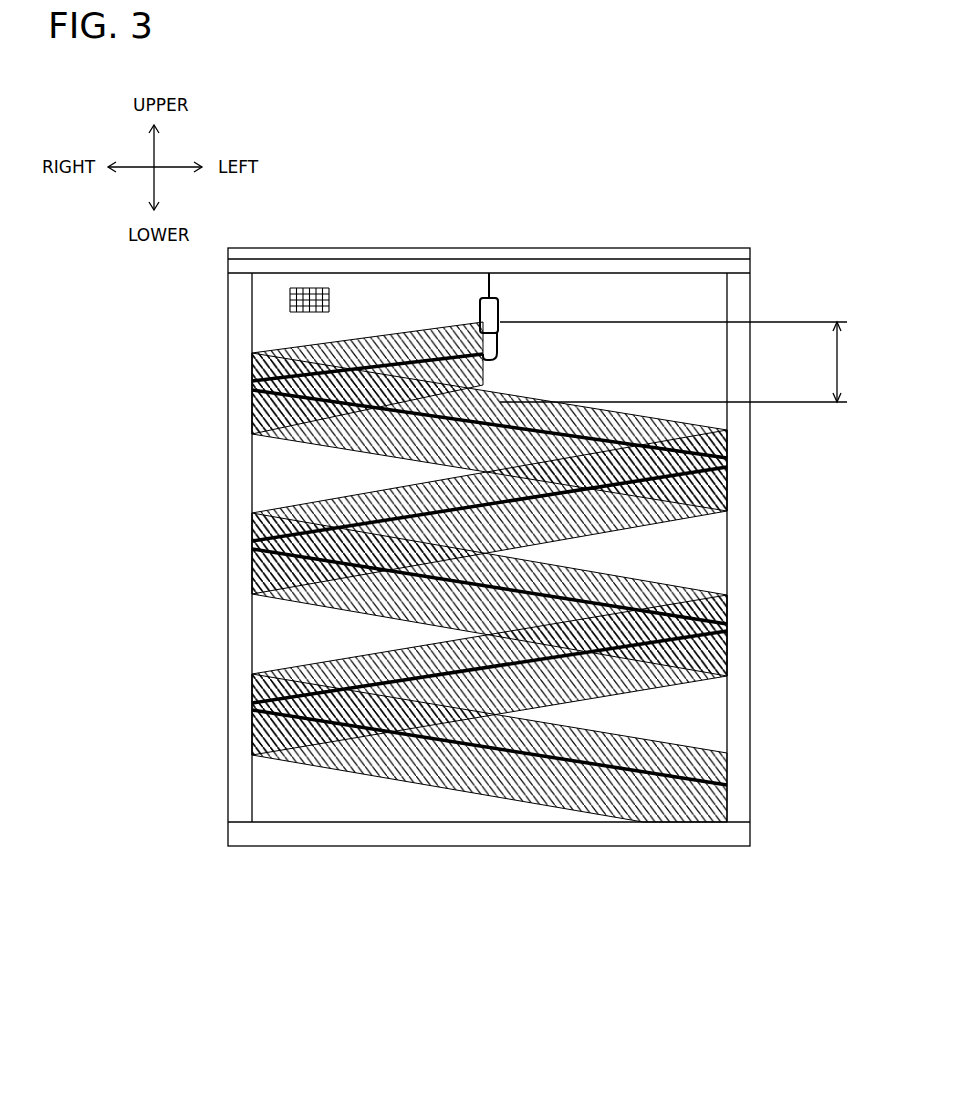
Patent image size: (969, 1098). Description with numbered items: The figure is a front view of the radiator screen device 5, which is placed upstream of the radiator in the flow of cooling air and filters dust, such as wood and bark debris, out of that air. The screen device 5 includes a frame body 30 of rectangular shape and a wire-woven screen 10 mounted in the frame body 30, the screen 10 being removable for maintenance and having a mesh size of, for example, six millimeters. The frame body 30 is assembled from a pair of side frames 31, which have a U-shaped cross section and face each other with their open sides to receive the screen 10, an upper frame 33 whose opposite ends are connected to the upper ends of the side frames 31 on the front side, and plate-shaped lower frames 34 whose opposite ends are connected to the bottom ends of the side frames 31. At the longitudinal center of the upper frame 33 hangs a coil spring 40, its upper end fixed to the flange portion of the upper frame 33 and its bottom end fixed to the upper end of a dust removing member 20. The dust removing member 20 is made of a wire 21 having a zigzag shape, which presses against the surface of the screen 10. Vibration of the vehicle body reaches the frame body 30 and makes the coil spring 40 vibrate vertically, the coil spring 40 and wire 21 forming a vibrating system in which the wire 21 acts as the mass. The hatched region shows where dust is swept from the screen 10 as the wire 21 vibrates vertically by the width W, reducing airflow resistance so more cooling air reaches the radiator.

The screen device 5 is at (699, 212).
The wire-woven screen 10 is at (303, 287).
The dust removing member 20 is at (350, 497).
The wire 21 is at (365, 658).
The frame body 30 is at (229, 310).
The side frames 31 is at (240, 525).
The upper frame 33 is at (568, 268).
The lower frames 34 is at (472, 835).
The coil spring 40 is at (465, 304).